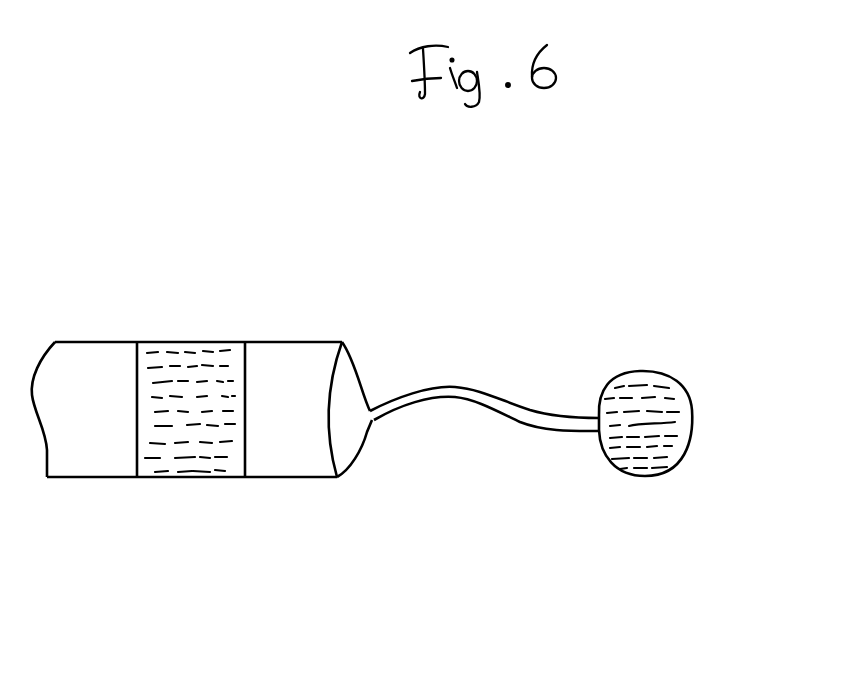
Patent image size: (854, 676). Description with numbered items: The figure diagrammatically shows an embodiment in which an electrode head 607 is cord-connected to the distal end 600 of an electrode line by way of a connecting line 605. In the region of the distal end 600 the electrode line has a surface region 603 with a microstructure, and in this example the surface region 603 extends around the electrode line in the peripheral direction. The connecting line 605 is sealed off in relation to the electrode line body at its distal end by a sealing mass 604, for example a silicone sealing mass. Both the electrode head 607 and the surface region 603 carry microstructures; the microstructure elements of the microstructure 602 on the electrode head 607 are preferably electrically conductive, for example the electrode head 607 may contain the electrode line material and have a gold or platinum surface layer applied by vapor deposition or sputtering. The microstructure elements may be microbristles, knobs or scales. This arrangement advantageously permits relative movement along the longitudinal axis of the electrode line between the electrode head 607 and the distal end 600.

The distal end 600 is at (357, 524).
The microstructure 602 is at (670, 443).
The surface region 603 is at (185, 367).
The sealing mass 604 is at (363, 447).
The connecting line 605 is at (490, 394).
The electrode head 607 is at (670, 377).